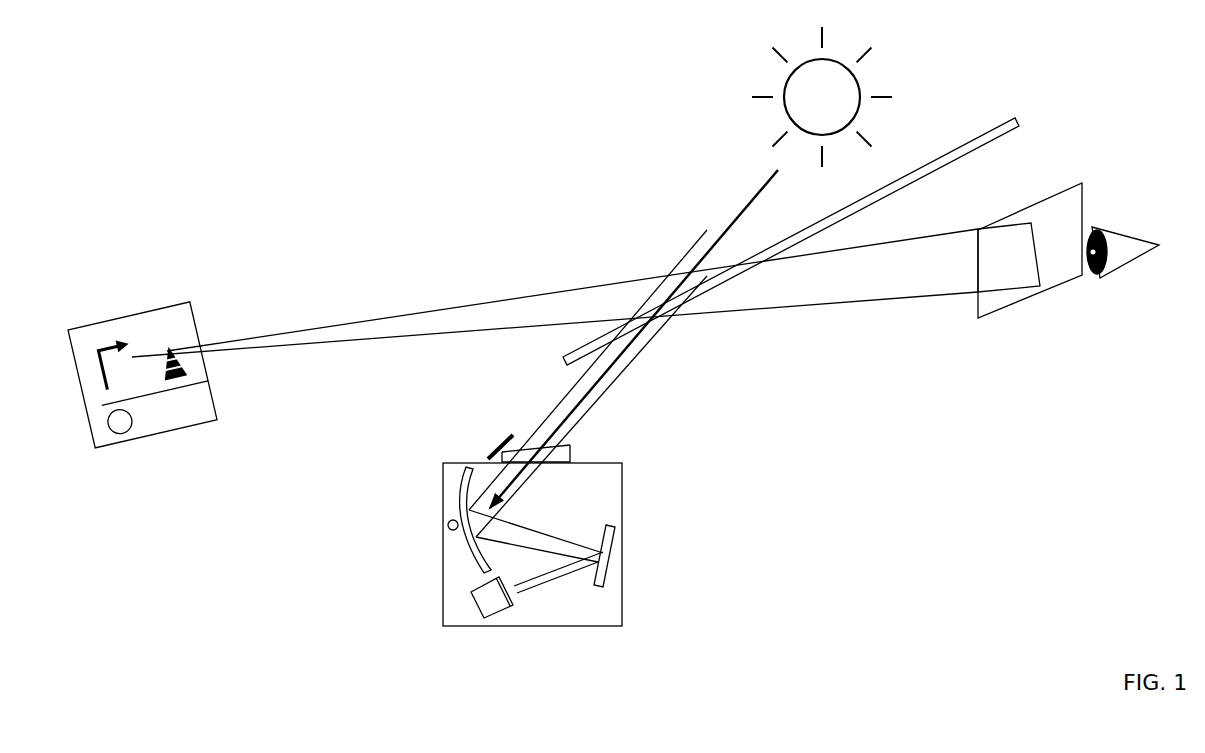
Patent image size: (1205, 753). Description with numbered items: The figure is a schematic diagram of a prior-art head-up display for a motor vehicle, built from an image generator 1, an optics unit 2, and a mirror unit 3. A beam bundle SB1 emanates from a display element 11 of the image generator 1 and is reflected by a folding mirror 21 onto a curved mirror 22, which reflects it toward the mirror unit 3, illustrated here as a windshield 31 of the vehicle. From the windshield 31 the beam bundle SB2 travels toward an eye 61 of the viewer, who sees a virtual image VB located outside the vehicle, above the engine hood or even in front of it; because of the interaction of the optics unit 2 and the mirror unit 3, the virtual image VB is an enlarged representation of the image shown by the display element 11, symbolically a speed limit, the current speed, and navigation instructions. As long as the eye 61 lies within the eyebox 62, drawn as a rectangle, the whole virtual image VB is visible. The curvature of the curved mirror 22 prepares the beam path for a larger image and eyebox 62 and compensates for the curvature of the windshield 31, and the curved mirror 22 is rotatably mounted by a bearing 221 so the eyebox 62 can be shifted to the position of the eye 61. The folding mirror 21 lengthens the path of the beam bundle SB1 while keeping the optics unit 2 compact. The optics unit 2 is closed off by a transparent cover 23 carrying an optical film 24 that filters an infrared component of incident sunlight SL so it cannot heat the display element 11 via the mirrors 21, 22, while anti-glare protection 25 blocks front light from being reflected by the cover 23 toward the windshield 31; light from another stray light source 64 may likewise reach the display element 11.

The image generator 1 is at (459, 635).
The display element 11 is at (508, 609).
The optics unit 2 is at (622, 490).
The folding mirror 21 is at (618, 548).
The curved mirror 22 is at (416, 518).
The bearing 221 is at (448, 525).
The transparent cover 23 is at (585, 429).
The optical film 24 is at (555, 437).
The anti-glare protection 25 is at (500, 447).
The mirror unit 3 is at (791, 241).
The windshield 31 is at (778, 237).
The eye 61 is at (1123, 232).
The eyebox 62 is at (992, 313).
The stray light source 64 is at (782, 83).
The sunlight SL is at (702, 257).
The beam bundle SB1 is at (557, 577).
The beam bundle SB2 is at (850, 285).
The virtual image VB is at (87, 403).